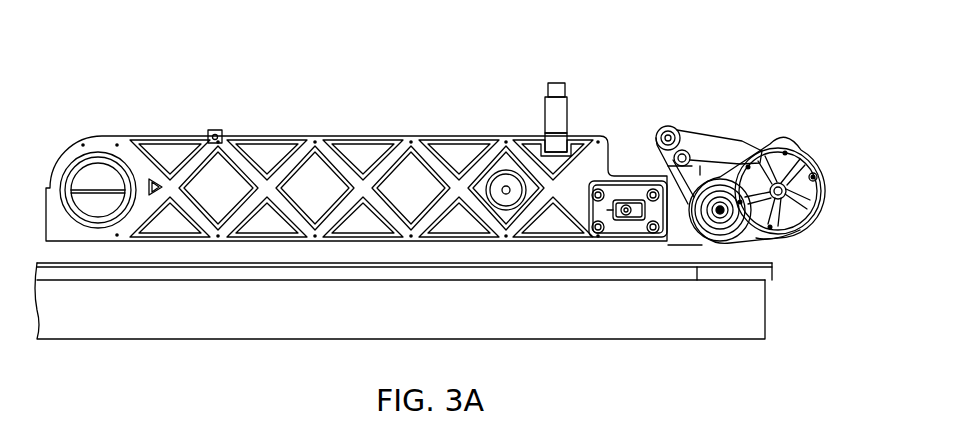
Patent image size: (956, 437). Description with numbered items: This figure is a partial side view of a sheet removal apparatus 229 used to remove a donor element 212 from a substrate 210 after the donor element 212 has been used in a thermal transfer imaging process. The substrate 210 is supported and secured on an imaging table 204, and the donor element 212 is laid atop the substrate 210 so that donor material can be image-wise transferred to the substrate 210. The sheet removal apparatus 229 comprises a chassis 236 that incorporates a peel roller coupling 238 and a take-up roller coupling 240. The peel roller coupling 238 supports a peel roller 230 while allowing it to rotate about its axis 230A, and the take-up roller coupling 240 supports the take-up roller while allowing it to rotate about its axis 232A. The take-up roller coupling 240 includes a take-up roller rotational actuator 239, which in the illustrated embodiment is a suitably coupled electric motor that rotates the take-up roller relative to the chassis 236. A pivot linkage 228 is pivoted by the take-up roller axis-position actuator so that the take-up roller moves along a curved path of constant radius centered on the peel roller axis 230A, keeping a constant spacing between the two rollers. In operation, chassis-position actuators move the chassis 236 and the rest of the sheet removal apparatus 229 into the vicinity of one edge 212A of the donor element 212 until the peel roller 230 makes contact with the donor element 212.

The imaging table 204 is at (127, 328).
The substrate 210 is at (310, 273).
The donor element 212 is at (252, 265).
The edge of donor element 212A is at (773, 269).
The pivot linkage 228 is at (686, 150).
The sheet removal apparatus 229 is at (668, 77).
The peel roller 230 is at (718, 216).
The peel roller axis 230A is at (721, 233).
The take-up roller axis 232A is at (781, 184).
The chassis 236 is at (685, 236).
The peel roller coupling 238 is at (687, 207).
The take-up roller rotational actuator 239 is at (817, 175).
The take-up roller coupling 240 is at (799, 224).